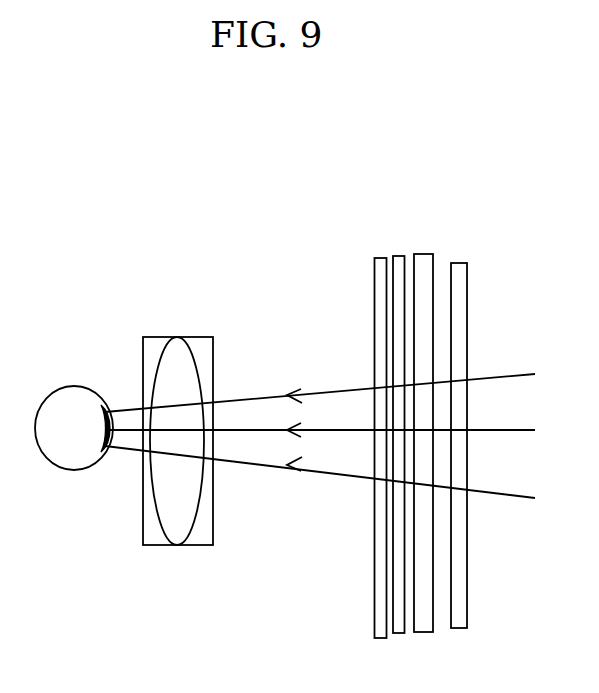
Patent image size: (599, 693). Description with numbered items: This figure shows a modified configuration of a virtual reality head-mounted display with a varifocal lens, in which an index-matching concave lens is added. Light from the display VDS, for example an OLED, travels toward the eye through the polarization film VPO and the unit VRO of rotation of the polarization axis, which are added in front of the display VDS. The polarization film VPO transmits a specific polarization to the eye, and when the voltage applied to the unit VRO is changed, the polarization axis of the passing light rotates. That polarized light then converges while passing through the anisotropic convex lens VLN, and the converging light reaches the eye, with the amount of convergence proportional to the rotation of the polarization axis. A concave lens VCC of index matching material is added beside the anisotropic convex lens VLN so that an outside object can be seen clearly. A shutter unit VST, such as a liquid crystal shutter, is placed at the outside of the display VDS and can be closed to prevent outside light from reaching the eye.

The anisotropic convex lens VLN is at (176, 336).
The concave lens VCC is at (199, 537).
The unit of rotation of the polarization axis VRO is at (374, 277).
The polarization film VPO is at (398, 256).
The display VDS is at (433, 266).
The shutter unit VST is at (467, 311).